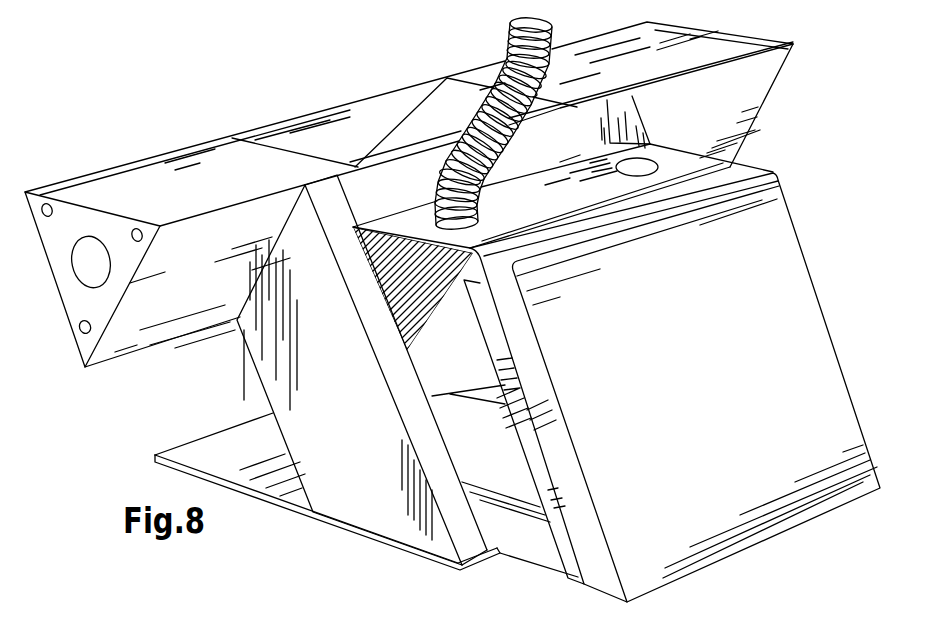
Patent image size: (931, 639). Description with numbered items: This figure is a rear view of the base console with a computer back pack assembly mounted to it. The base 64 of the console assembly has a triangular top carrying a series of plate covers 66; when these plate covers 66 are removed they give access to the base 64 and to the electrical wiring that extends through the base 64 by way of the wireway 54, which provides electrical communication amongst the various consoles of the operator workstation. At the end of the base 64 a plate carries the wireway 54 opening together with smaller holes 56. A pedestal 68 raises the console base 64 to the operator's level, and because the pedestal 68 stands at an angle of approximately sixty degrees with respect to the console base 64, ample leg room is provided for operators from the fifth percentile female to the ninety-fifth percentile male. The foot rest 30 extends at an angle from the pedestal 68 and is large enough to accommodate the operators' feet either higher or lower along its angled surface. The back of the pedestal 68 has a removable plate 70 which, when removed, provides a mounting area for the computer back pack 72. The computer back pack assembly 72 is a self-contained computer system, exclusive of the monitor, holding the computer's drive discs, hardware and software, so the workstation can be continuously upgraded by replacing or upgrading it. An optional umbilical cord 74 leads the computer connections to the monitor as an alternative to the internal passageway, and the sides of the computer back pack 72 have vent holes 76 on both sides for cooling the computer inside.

The foot rest 30 is at (218, 428).
The wireway 54 is at (78, 262).
The mounting holes 56 is at (33, 190).
The base 64 is at (210, 297).
The plate covers 66 is at (233, 185).
The pedestal 68 is at (335, 425).
The removable plate 70 is at (460, 533).
The computer back pack assembly 72 is at (826, 288).
The umbilical cord 74 is at (500, 127).
The vent holes 76 is at (435, 318).